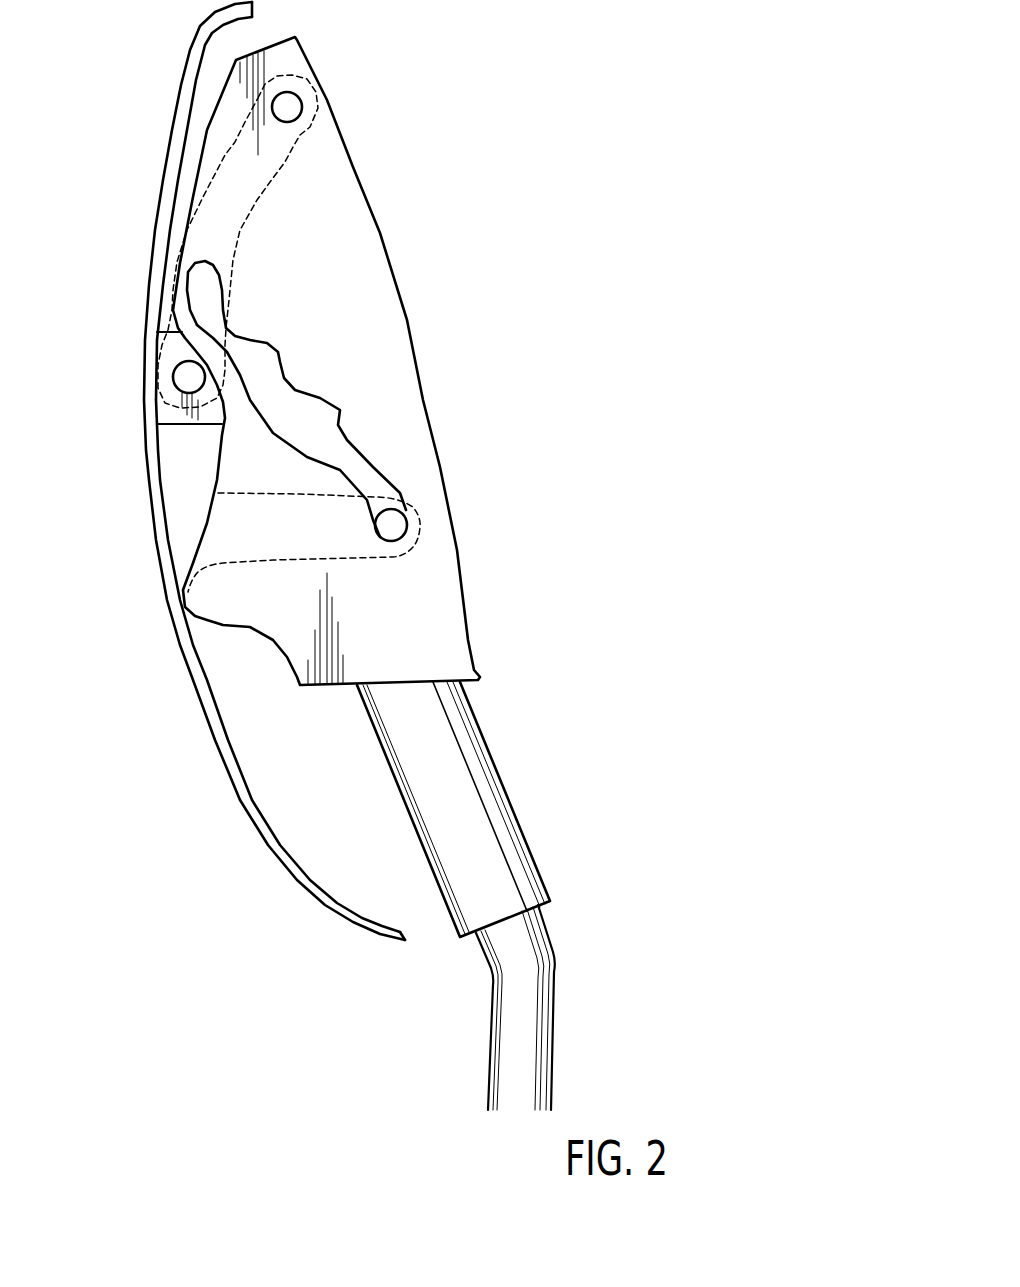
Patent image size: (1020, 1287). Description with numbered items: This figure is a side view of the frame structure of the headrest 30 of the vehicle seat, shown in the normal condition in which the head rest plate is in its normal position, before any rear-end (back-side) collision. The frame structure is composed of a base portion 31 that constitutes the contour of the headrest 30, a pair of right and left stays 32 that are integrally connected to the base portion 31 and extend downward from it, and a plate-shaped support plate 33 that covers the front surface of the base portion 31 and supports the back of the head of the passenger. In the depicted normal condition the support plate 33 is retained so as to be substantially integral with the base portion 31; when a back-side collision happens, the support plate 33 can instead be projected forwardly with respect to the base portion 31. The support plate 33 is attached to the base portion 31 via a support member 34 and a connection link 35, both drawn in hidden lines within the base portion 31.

The headrest 30 is at (538, 47).
The base portion 31 is at (358, 253).
The stays 32 is at (528, 1032).
The support plate 33 is at (157, 522).
The support member 34 is at (257, 530).
The connection link 35 is at (213, 198).